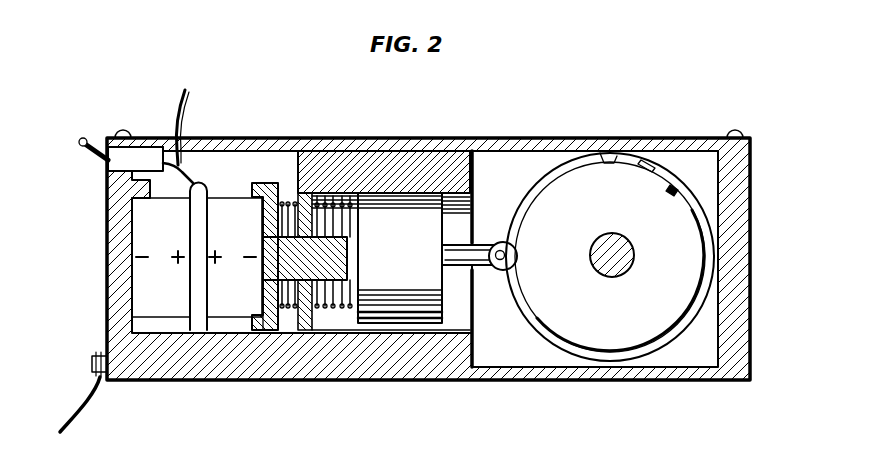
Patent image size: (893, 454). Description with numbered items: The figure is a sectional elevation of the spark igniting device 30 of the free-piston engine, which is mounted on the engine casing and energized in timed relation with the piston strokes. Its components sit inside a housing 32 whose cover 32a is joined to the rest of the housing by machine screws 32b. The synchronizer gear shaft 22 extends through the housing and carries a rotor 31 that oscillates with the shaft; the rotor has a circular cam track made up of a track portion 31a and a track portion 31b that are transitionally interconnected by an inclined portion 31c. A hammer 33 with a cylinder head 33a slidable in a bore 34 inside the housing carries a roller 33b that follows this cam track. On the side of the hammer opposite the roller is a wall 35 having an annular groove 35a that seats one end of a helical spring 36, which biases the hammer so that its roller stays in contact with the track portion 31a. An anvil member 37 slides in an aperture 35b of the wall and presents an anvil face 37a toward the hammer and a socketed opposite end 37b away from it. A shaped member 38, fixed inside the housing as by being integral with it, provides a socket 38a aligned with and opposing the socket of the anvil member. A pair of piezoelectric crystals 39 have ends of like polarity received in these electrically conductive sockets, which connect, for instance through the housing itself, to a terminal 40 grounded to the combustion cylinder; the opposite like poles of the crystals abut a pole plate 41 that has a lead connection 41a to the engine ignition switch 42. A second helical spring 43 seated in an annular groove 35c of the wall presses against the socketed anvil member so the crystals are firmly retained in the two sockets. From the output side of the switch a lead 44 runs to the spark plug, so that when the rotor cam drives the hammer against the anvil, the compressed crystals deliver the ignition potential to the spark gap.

The synchronizer gear shaft 22 is at (605, 260).
The igniting device 30 is at (680, 381).
The rotor 31 is at (640, 198).
The track portion 31a is at (708, 247).
The track portion 31b is at (642, 153).
The inclined portion 31c is at (607, 155).
The housing 32 is at (740, 310).
The cover 32a is at (513, 118).
The machine screws 32b is at (122, 133).
The hammer 33 is at (423, 262).
The cylinder head 33a is at (426, 305).
The roller 33b is at (503, 273).
The bore 34 is at (458, 212).
The wall 35 is at (295, 265).
The annular groove 35a is at (340, 330).
The aperture 35b is at (303, 232).
The annular groove 35c is at (297, 202).
The helical spring 36 is at (352, 300).
The anvil member 37 is at (290, 258).
The anvil face 37a is at (343, 255).
The socketed opposite end 37b is at (258, 300).
The shaped member 38 is at (113, 266).
The socket 38a is at (132, 298).
The piezoelectric crystals 39 is at (173, 300).
The terminal 40 is at (92, 357).
The pole plate 41 is at (196, 333).
The lead connection 41a is at (183, 172).
The engine ignition switch 42 is at (124, 158).
The helical spring 43 is at (276, 215).
The lead 44 is at (185, 124).